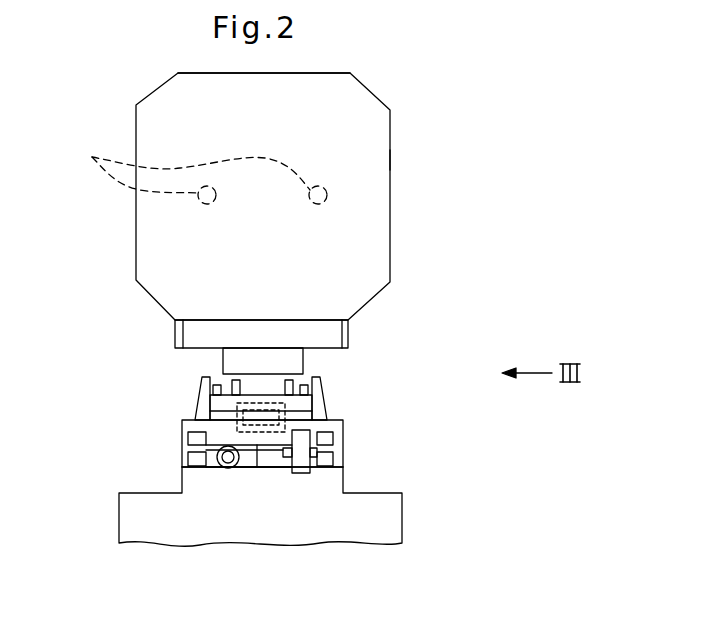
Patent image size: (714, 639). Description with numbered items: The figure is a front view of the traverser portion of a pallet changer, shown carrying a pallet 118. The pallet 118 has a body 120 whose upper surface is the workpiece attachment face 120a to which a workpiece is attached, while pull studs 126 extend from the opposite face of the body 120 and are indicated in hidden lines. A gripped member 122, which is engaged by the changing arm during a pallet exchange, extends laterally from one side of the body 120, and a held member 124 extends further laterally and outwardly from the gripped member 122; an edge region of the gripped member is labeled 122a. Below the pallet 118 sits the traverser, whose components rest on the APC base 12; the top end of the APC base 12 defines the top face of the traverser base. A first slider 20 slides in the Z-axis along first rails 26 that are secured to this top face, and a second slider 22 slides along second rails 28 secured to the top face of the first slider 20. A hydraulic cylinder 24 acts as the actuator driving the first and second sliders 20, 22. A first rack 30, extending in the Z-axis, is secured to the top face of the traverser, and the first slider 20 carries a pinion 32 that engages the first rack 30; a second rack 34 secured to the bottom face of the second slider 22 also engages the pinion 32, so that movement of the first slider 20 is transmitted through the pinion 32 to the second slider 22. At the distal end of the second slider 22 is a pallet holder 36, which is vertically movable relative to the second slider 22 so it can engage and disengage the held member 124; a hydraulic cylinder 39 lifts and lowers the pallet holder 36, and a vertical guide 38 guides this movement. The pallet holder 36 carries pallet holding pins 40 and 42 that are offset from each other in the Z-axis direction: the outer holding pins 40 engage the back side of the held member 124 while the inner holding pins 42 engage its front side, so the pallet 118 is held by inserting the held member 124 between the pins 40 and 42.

The pallet 118 is at (418, 98).
The body 120 is at (378, 157).
The workpiece attachment face 120a is at (238, 126).
The pull studs 126 is at (183, 173).
The gripped member 122 is at (218, 330).
The flange edge portion 122a is at (345, 330).
The held member 124 is at (287, 357).
The vertical guide 38 is at (200, 402).
The pallet holding pins 40 is at (238, 380).
The pallet holding pins 42 is at (286, 382).
The second rack 34 is at (318, 416).
The pallet holder 36 is at (300, 402).
The second slider 22 is at (183, 430).
The first slider 20 is at (183, 458).
The second rails 28 is at (188, 439).
The first rails 26 is at (188, 460).
The first rack 30 is at (300, 474).
The hydraulic cylinder 24 is at (228, 468).
The hydraulic cylinder 39 is at (257, 468).
The pinion 32 is at (283, 468).
The APC base 12 is at (390, 507).